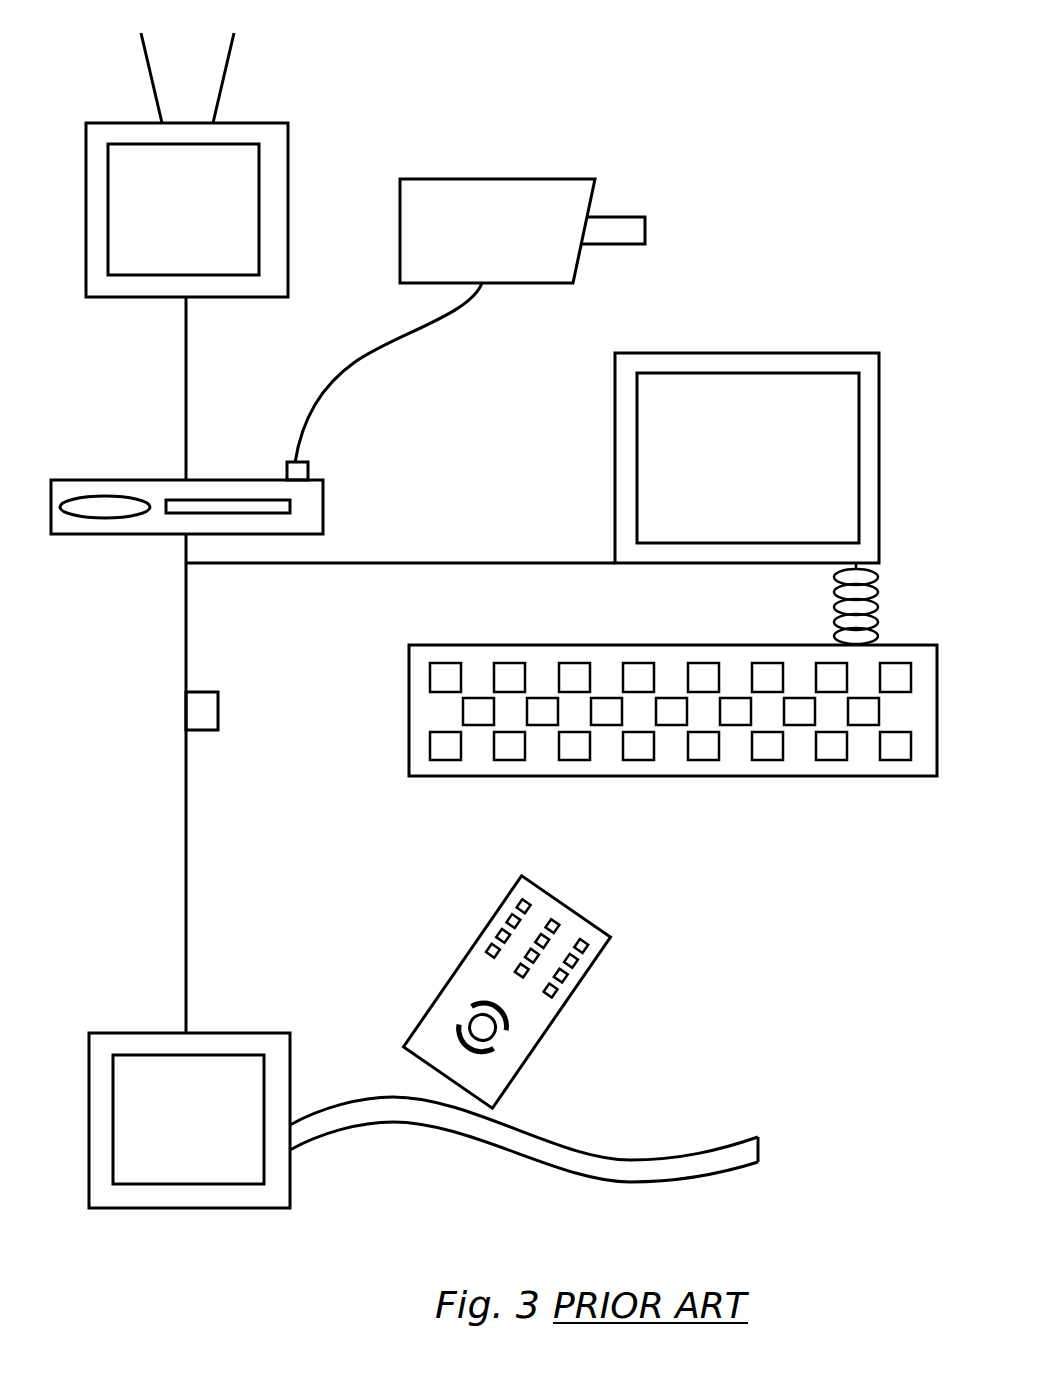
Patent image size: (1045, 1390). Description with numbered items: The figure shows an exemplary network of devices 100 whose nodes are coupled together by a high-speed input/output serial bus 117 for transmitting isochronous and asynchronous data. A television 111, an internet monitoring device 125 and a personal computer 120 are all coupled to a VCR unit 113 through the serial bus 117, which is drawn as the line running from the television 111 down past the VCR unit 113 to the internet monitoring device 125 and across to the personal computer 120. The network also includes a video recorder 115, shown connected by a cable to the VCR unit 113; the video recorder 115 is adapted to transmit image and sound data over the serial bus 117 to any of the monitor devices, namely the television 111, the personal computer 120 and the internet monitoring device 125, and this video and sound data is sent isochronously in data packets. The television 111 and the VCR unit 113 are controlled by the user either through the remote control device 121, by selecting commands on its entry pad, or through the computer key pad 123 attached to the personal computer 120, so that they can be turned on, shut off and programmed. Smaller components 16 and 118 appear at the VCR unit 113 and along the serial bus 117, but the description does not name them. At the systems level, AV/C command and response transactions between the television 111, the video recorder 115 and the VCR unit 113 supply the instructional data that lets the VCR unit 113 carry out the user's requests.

The network of devices 100 is at (677, 160).
The television 111 is at (287, 169).
The VCR unit 113 is at (323, 510).
The video recorder 115 is at (476, 179).
The connector 16 is at (308, 463).
The IEEE 1394-1995 serial bus 117 is at (186, 370).
The connector 118 is at (218, 705).
The personal computer 120 is at (742, 353).
The remote control device 121 is at (577, 993).
The computer key pad 123 is at (673, 776).
The internet monitoring device 125 is at (247, 1033).